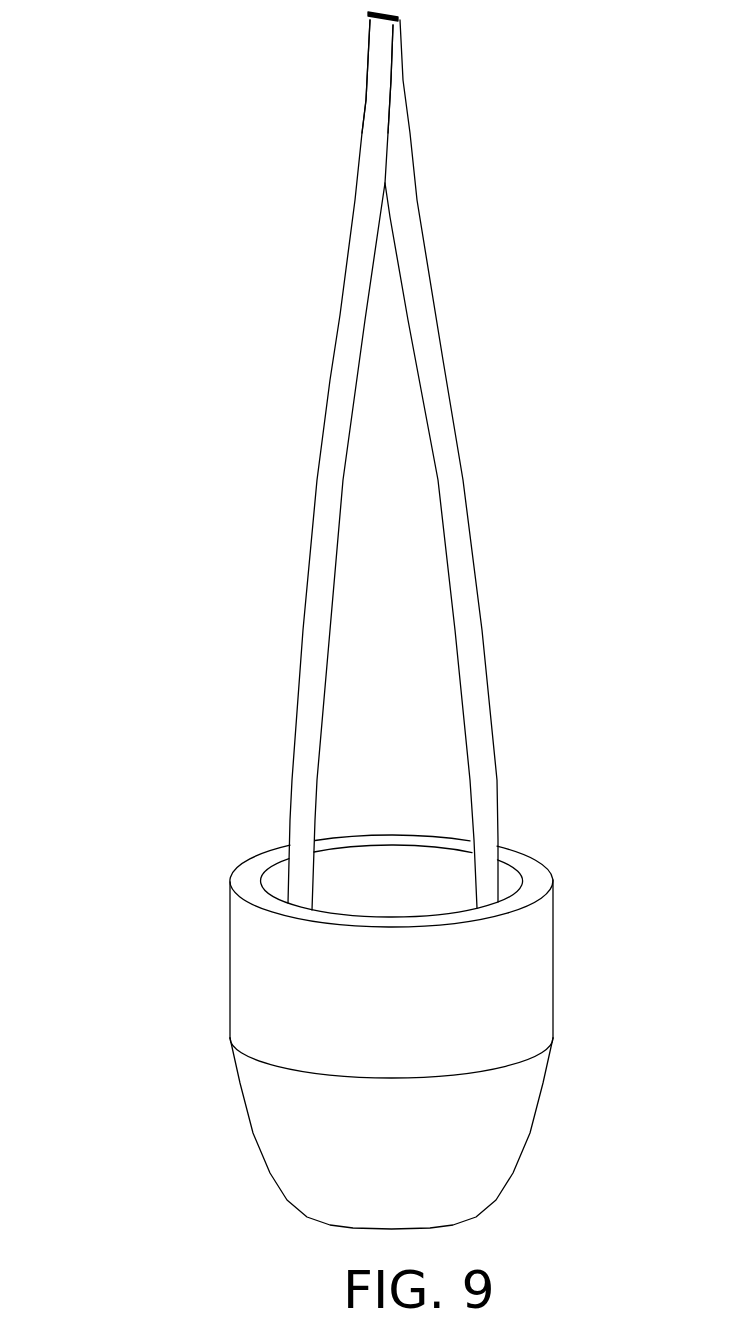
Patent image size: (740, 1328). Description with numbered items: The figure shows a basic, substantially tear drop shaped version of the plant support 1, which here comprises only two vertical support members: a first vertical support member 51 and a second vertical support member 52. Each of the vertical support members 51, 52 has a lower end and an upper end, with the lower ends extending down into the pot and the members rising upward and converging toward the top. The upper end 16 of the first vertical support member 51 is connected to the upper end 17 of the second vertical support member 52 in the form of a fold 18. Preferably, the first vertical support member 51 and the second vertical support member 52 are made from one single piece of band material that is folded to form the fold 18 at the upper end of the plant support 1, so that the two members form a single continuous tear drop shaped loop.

The plant support 1 is at (200, 687).
The upper end of the first vertical support member 16 is at (380, 25).
The upper end of the second vertical support member 17 is at (400, 28).
The fold 18 is at (370, 15).
The first vertical support member 51 is at (332, 478).
The second vertical support member 52 is at (450, 443).